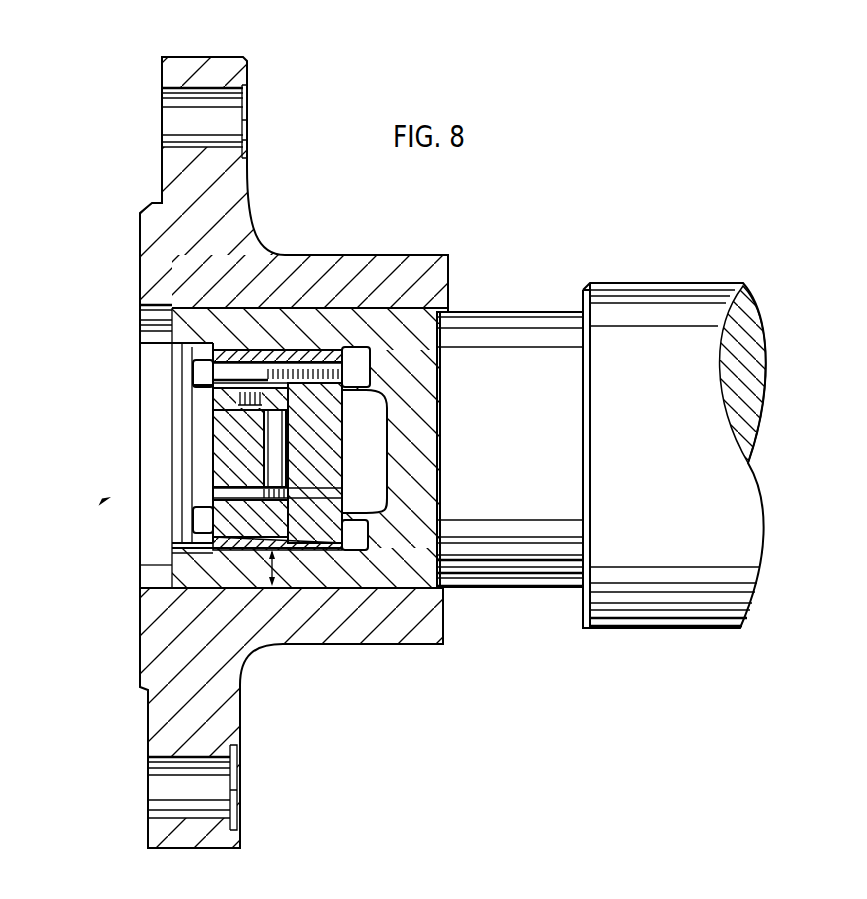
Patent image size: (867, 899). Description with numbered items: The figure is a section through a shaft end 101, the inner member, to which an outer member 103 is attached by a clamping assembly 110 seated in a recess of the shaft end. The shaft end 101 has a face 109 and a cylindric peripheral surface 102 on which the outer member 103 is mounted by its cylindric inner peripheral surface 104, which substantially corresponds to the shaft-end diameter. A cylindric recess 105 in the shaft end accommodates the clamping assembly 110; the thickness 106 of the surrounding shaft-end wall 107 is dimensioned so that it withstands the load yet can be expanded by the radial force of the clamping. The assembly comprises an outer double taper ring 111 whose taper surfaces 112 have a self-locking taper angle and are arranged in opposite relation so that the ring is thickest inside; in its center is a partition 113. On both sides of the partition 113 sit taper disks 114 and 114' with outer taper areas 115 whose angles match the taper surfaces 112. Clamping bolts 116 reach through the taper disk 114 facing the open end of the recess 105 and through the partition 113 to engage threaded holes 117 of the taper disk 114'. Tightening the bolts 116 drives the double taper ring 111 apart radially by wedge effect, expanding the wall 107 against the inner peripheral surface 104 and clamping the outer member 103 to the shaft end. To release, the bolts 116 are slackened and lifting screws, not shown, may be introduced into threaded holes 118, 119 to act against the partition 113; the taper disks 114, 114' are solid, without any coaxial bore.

The shaft end 101 is at (543, 575).
The cylindric peripheral surface 102 is at (495, 590).
The outer member 103 is at (217, 698).
The cylindric inner peripheral surface 104 is at (141, 583).
The cylindric recess 105 is at (197, 548).
The thickness 106 is at (274, 568).
The shaft-end wall 107 is at (228, 590).
The face 109 is at (141, 565).
The clamping assembly 110 is at (104, 501).
The outer double taper ring 111 is at (292, 350).
The taper surfaces 112 is at (193, 366).
The partition 113 is at (287, 404).
The taper disk 114 is at (193, 462).
The taper disk 114' is at (299, 466).
The outer taper areas 115 is at (172, 325).
The clamping bolts 116 is at (213, 378).
The threaded holes 117 is at (400, 385).
The threaded holes 118 is at (238, 400).
The threaded holes 119 is at (265, 495).